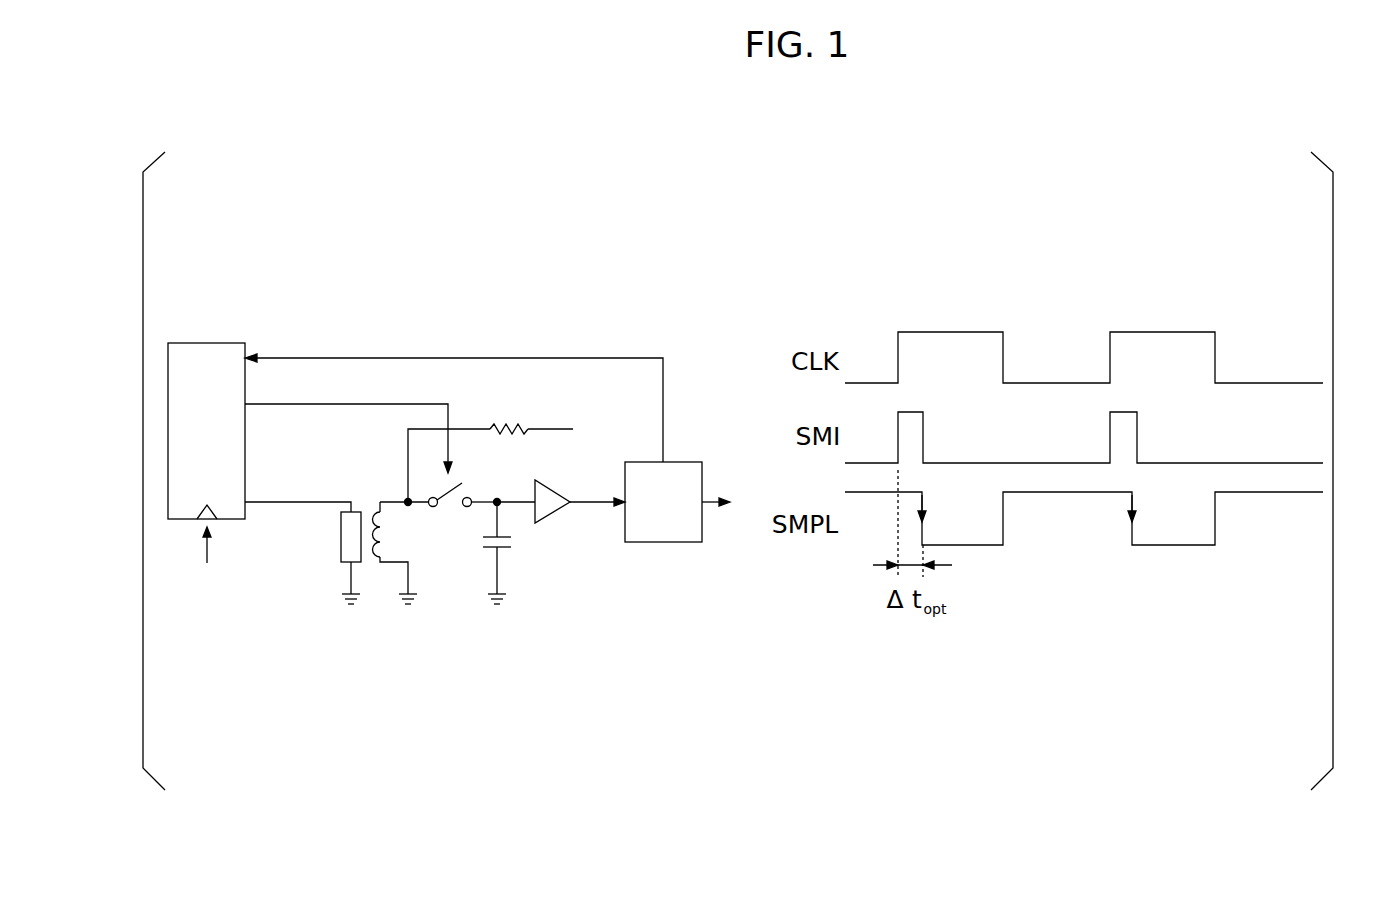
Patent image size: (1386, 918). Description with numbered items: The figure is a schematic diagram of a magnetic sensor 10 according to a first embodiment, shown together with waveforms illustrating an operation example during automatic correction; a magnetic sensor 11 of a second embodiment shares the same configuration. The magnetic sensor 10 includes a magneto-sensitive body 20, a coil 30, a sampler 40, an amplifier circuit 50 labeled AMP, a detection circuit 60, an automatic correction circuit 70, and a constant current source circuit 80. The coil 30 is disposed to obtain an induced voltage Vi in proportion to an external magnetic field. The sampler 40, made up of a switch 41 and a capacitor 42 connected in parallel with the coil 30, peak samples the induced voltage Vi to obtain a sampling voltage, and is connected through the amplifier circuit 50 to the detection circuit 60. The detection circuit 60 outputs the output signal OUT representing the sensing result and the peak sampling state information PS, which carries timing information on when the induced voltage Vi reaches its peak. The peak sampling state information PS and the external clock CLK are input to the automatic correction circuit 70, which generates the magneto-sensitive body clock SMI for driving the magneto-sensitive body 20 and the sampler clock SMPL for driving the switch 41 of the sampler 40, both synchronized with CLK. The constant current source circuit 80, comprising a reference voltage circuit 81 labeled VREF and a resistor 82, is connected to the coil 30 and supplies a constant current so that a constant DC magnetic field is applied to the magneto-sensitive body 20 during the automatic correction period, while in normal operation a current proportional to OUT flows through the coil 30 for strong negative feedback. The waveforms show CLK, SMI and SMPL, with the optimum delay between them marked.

The magnetic sensor 10 is at (473, 484).
The magnetic sensor 11 is at (465, 484).
The magneto-sensitive body 20 is at (340, 532).
The coil 30 is at (380, 520).
The sampler 40 is at (491, 608).
The switch 41 is at (450, 504).
The capacitor 42 is at (510, 550).
The amplifier circuit 50 is at (563, 508).
The detection circuit 60 is at (657, 542).
The automatic correction circuit 70 is at (208, 343).
The constant current source circuit 80 is at (546, 342).
The reference voltage circuit 81 is at (492, 427).
The resistor 82 is at (575, 432).